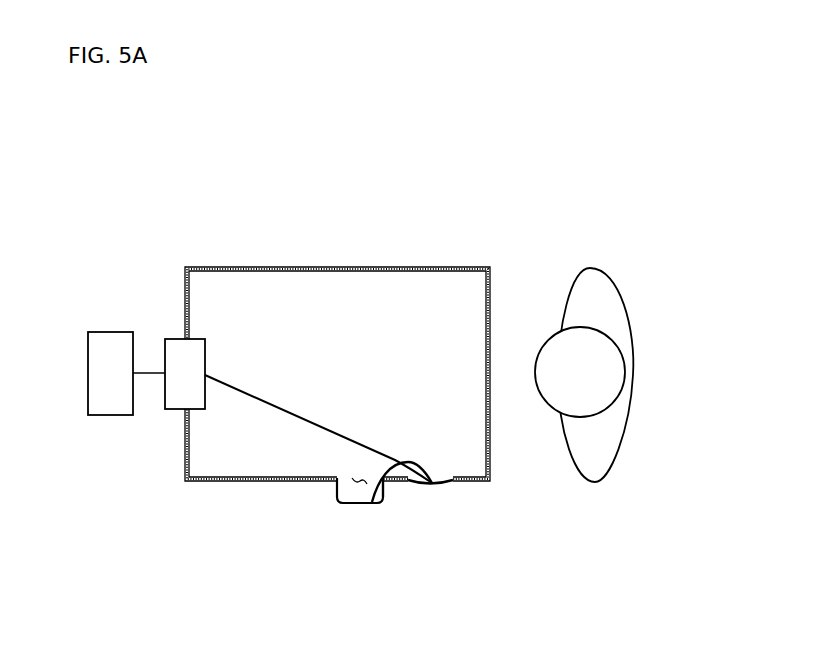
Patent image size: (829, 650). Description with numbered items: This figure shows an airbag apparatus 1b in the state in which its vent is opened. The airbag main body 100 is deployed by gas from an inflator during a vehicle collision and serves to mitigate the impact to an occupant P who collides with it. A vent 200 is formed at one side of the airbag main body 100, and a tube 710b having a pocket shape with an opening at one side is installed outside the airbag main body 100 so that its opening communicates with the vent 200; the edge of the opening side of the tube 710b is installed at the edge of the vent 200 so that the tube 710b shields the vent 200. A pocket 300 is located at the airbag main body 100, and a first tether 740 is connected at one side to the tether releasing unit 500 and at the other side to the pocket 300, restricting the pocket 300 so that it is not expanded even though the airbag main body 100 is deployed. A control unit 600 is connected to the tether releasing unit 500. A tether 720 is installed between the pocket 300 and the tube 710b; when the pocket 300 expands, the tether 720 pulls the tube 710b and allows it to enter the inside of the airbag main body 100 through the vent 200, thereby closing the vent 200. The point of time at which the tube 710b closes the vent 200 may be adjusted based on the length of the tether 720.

The airbag apparatus 1b is at (161, 128).
The airbag main body 100 is at (337, 267).
The vent 200 is at (365, 483).
The pocket 300 is at (442, 486).
The tether releasing unit 500 is at (178, 404).
The control unit 600 is at (108, 349).
The tube 710b is at (357, 503).
The tether 720 is at (383, 492).
The first tether 740 is at (260, 393).
The occupant P is at (596, 295).